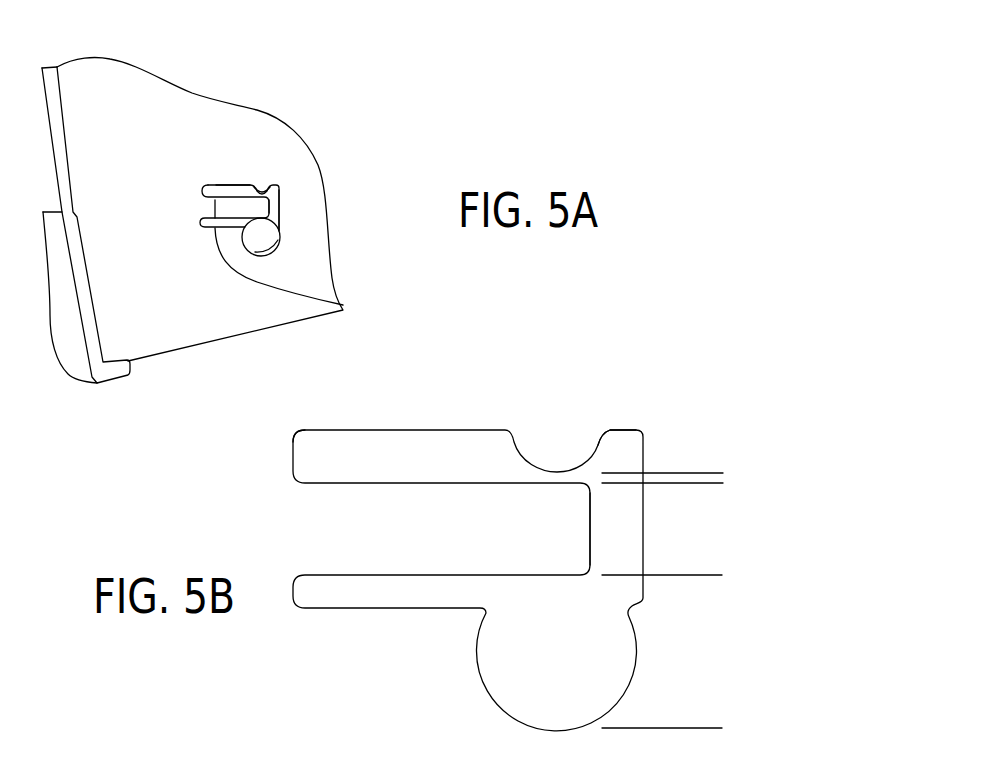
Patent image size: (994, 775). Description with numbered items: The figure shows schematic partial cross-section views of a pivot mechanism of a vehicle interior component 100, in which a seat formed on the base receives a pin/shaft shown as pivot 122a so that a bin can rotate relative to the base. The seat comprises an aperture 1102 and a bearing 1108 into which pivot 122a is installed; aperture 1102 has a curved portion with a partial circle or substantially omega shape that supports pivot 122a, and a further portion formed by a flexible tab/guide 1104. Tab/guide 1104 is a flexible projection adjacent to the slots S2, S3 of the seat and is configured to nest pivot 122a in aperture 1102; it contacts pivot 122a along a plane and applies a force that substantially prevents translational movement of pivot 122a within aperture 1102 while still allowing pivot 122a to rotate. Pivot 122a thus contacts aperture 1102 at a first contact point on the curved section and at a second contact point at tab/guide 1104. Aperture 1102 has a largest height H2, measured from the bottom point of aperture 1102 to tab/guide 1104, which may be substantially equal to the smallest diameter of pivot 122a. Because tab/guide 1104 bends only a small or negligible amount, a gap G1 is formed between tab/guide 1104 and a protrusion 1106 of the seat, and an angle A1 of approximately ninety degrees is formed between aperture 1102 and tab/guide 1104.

In FIG. 5A, the interior component 100 is at (268, 77).
In FIG. 5A, the aperture 1102 is at (215, 192).
In FIG. 5A, the slot S2 is at (216, 185).
In FIG. 5A, the protrusion 1106 is at (262, 191).
In FIG. 5B, the protrusion 1106 is at (599, 441).
In FIG. 5A, the tab/guide 1104 is at (268, 210).
In FIG. 5B, the tab/guide 1104 is at (590, 532).
In FIG. 5A, the pivot 122a is at (280, 233).
In FIG. 5A, the bearing 1108 is at (273, 243).
In FIG. 5A, the slot S3 is at (343, 305).
In FIG. 5B, the angle A1 is at (300, 449).
In FIG. 5B, the gap G1 is at (709, 535).
In FIG. 5B, the height H2 is at (710, 575).